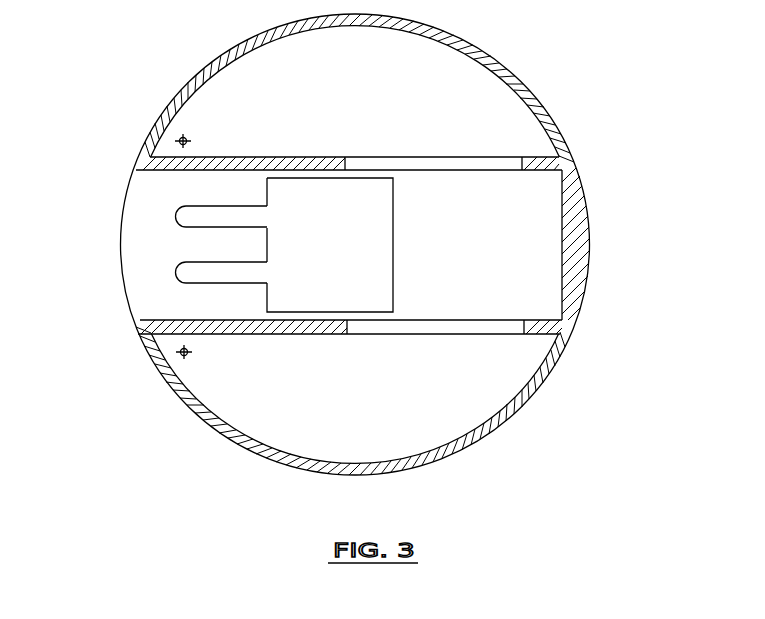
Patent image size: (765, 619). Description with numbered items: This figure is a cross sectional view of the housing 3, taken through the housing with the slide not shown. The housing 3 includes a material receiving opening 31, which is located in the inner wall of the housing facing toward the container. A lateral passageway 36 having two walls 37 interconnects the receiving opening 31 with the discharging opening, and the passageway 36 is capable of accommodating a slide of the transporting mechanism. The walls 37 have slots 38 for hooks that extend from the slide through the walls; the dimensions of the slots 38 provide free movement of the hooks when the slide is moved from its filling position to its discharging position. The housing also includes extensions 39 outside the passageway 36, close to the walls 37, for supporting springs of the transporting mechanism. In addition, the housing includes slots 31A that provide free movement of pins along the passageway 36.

The housing 3 is at (577, 262).
The material receiving opening 31 is at (345, 263).
The slots 31A is at (238, 272).
The lateral passageway 36 is at (146, 256).
The walls 37 is at (305, 163).
The slots 38 is at (440, 328).
The extensions 39 is at (180, 139).